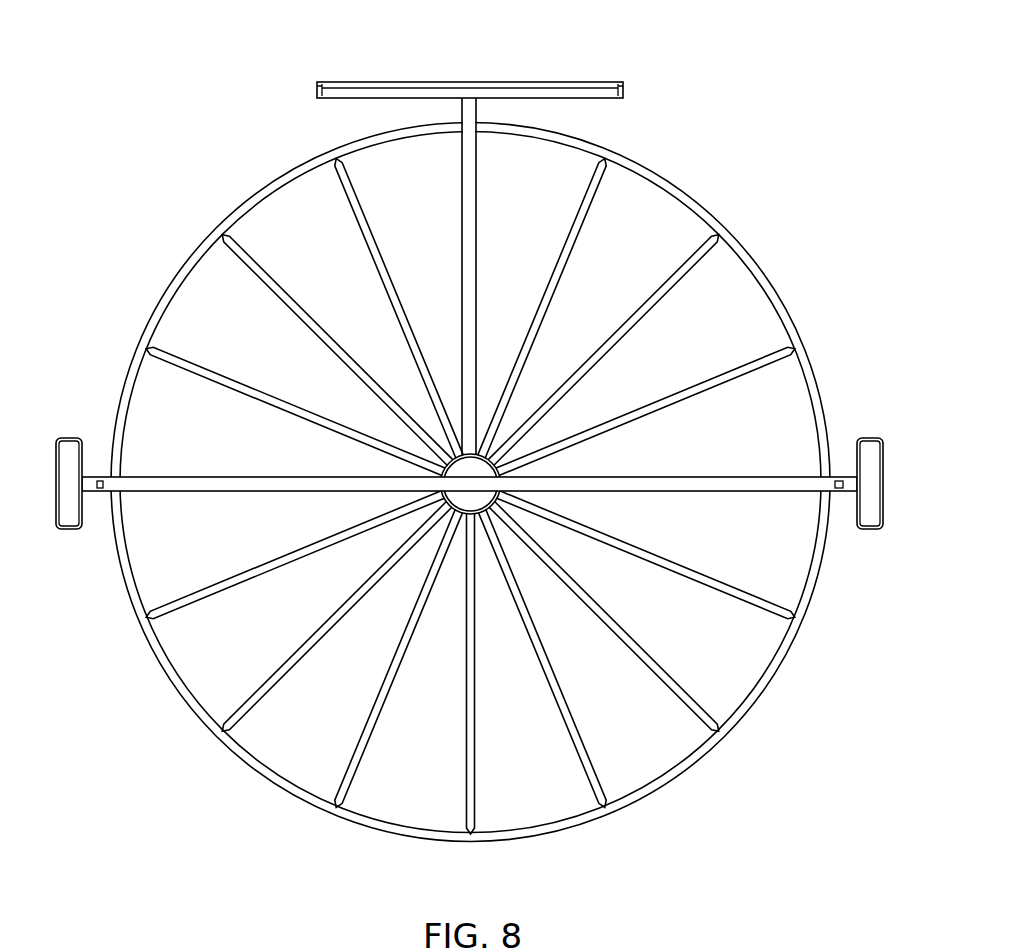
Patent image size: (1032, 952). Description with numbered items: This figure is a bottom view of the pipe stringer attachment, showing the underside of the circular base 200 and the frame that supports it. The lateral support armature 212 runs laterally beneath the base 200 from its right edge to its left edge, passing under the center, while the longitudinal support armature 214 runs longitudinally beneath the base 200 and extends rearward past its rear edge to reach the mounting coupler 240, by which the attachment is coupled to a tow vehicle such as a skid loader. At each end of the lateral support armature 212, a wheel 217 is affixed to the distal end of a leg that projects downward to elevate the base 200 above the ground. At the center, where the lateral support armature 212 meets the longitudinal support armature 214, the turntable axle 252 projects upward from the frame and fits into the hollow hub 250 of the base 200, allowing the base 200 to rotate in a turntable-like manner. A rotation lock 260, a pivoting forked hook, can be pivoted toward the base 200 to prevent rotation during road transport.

The base 200 is at (775, 355).
The lateral support armature 212 is at (708, 484).
The longitudinal support armature 214 is at (473, 270).
The wheel 217 is at (67, 452).
The mounting coupler 240 is at (307, 78).
The hub 250 is at (493, 504).
The turntable axle 252 is at (489, 507).
The rotation lock 260 is at (478, 122).